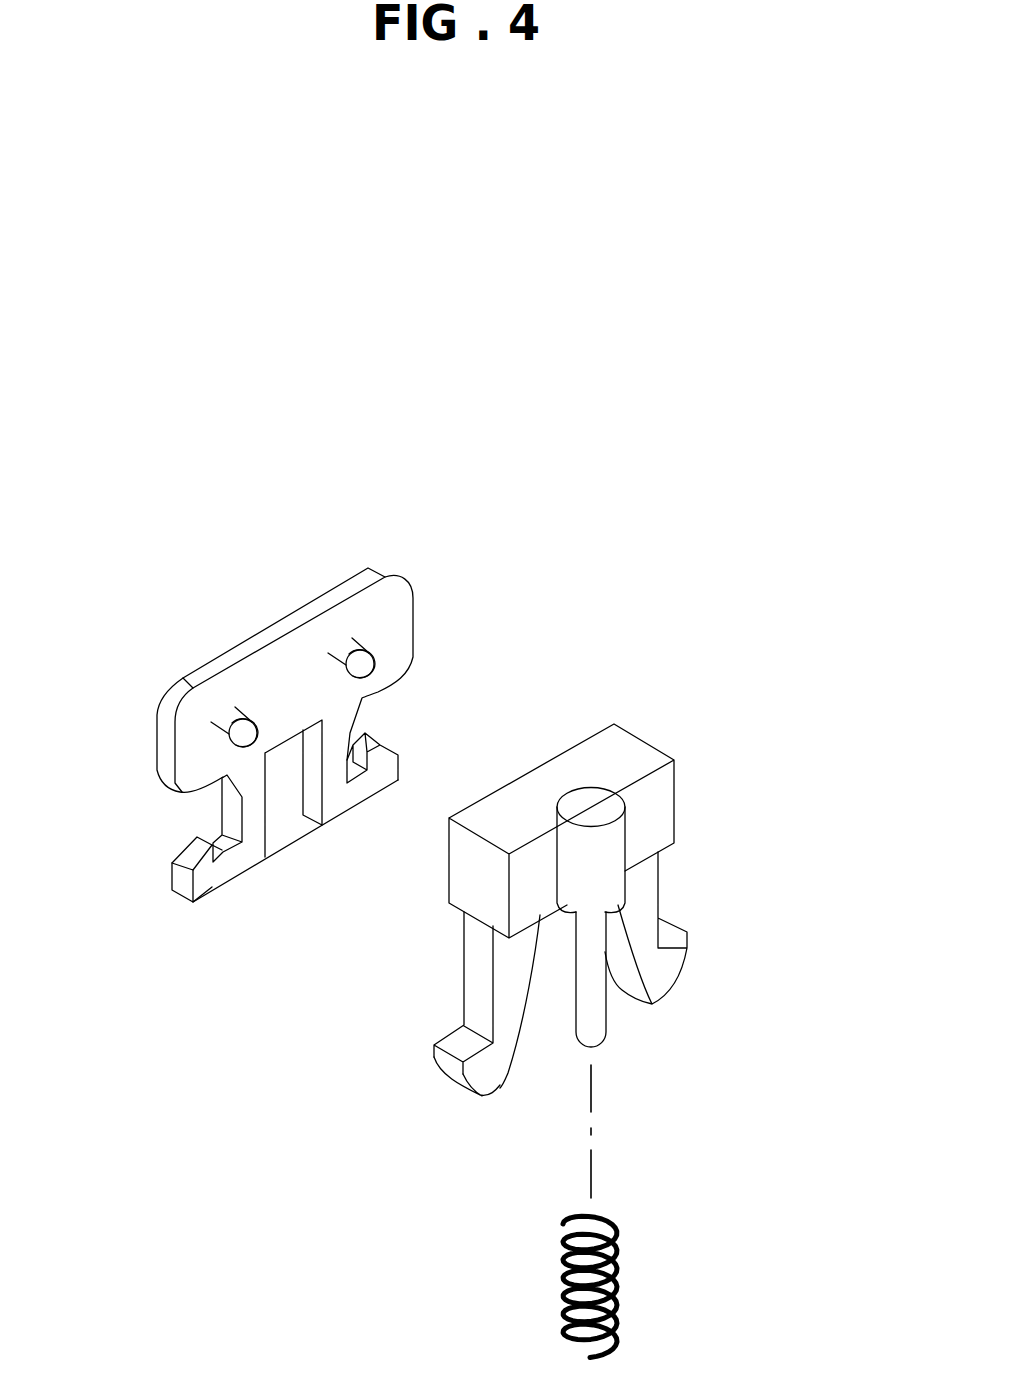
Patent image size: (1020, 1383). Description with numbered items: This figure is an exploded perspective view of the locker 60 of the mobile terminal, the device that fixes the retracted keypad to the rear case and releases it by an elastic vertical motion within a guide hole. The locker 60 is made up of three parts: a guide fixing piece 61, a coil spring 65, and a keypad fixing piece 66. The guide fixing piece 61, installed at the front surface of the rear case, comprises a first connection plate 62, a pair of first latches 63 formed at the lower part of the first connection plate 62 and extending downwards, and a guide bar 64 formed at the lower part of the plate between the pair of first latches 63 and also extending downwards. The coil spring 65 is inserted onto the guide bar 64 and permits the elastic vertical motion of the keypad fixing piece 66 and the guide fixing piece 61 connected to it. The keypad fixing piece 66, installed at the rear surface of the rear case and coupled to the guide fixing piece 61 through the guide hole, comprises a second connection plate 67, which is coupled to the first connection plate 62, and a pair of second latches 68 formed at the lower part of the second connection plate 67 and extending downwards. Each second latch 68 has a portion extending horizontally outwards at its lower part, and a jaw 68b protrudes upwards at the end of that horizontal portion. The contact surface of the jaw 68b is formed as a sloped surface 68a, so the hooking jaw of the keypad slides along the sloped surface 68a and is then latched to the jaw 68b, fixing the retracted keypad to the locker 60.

The locker 60 is at (727, 448).
The guide fixing piece 61 is at (645, 745).
The first connection plate 62 is at (663, 805).
The first latches 63 is at (493, 1087).
The guide bar 64 is at (597, 1017).
The coil spring 65 is at (618, 1263).
The keypad fixing piece 66 is at (275, 624).
The second connection plate 67 is at (400, 621).
The second latches 68 is at (340, 802).
The sloped surface 68a is at (187, 857).
The jaw 68b is at (203, 897).